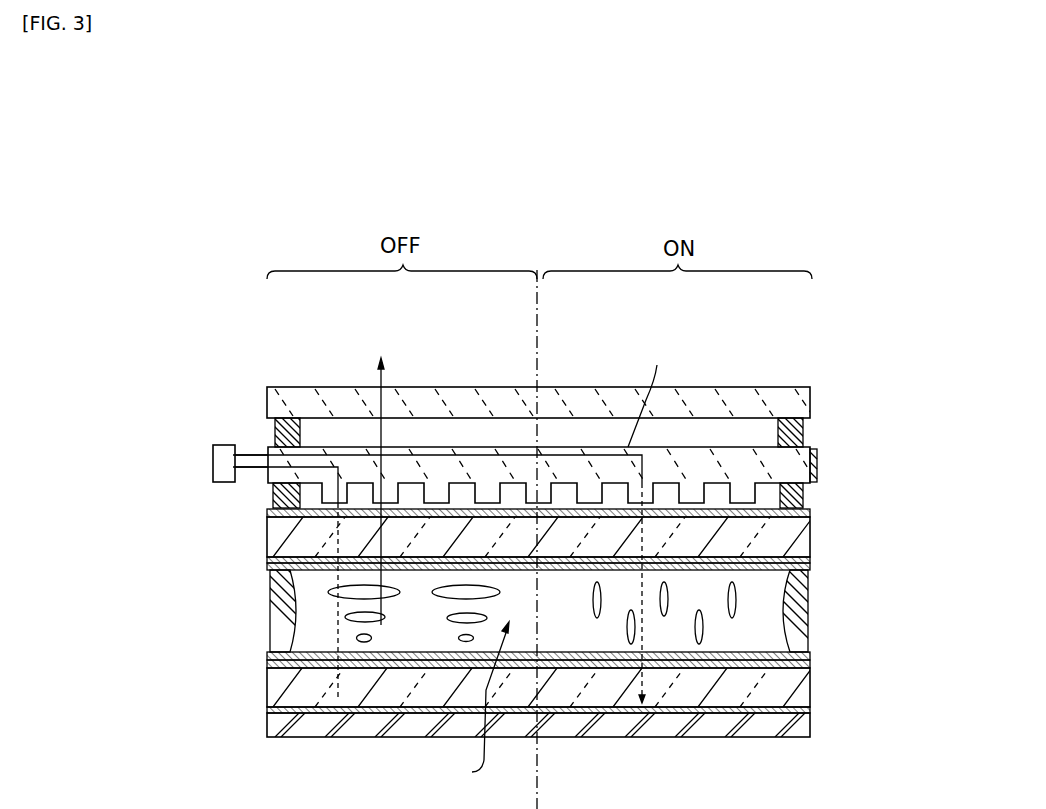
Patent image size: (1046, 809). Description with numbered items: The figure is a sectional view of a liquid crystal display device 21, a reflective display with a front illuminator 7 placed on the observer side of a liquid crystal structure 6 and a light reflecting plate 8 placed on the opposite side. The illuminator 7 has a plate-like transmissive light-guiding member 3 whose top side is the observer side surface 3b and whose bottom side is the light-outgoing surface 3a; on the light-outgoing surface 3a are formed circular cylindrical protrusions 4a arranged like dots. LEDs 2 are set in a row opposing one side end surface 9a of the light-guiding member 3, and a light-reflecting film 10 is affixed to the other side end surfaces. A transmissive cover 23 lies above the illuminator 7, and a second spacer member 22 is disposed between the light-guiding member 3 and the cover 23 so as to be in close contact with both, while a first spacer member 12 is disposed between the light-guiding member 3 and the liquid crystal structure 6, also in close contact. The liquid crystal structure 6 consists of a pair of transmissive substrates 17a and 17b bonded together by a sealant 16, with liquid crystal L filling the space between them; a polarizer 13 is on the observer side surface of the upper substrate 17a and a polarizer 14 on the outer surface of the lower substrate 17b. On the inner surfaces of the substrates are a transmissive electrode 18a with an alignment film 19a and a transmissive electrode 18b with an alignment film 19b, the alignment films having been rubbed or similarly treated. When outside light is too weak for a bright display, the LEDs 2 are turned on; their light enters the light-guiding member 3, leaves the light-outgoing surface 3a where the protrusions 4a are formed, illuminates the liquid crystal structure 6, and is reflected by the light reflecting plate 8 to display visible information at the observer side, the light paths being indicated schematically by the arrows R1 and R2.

The liquid crystal display device 21 is at (242, 363).
The transmissive cover 23 is at (722, 402).
The second spacer member 22 is at (803, 430).
The light-reflecting film 10 is at (817, 465).
The light-guiding member 3 is at (588, 447).
The light-outgoing surface 3a is at (509, 486).
The observer side surface 3b is at (495, 440).
The circular cylindrical protrusions 4a is at (432, 492).
The LEDs 2 is at (213, 460).
The side end surface 9a is at (268, 447).
The first spacer member 12 is at (803, 500).
The illuminator 7 is at (876, 447).
The liquid crystal structure 6 is at (876, 515).
The transmissive substrate 17a is at (268, 515).
The polarizer 13 is at (810, 520).
The transmissive electrode 18a is at (268, 557).
The alignment film 19a is at (268, 567).
The sealant 16 is at (803, 612).
The alignment film 19b is at (268, 656).
The transmissive electrode 18b is at (268, 664).
The polarizer 14 is at (807, 717).
The transmissive substrate 17b is at (266, 711).
The light reflecting plate 8 is at (670, 728).
The light path arrow R1 is at (384, 478).
The light path arrow R2 is at (649, 393).
The liquid crystal L is at (484, 705).